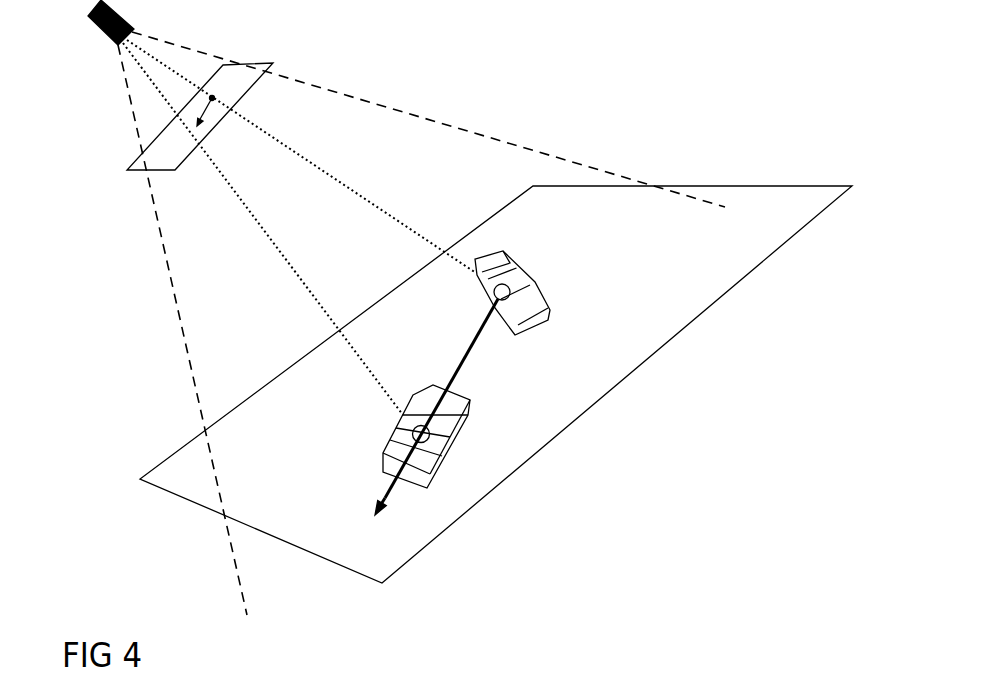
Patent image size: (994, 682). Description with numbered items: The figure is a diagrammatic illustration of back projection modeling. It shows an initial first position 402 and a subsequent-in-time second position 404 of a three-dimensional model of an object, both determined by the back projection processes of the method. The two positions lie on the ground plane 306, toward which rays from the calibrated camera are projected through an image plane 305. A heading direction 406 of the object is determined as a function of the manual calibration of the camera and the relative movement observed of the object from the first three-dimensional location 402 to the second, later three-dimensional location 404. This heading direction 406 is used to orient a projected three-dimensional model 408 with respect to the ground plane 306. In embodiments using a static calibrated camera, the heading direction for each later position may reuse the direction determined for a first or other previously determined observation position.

The image plane 305 is at (140, 156).
The ground plane 306 is at (752, 187).
The first position P1 402 is at (547, 275).
The second position P2 404 is at (393, 423).
The heading direction 406 is at (385, 498).
The projected 3D model 408 is at (455, 422).